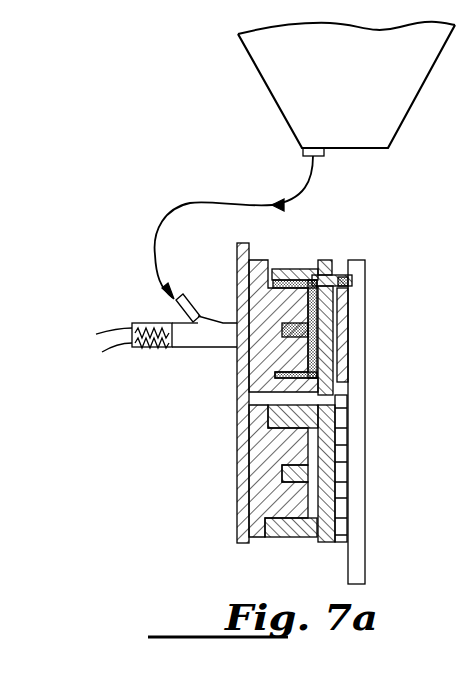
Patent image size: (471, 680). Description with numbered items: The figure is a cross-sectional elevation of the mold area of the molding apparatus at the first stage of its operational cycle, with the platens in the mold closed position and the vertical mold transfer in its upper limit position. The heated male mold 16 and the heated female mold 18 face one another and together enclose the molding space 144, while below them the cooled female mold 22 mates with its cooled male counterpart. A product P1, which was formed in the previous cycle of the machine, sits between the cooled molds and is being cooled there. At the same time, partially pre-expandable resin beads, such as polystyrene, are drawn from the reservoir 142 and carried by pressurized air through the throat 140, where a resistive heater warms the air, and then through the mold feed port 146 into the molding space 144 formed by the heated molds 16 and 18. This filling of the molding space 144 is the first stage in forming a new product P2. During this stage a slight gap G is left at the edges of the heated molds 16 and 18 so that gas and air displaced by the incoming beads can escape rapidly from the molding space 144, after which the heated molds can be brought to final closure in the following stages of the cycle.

The reservoir 142 is at (302, 77).
The throat 140 is at (168, 346).
The mold feed port 146 is at (246, 366).
The heated male mold 16 is at (255, 268).
The gap G is at (290, 281).
The molding space 144 is at (330, 262).
The heated female mold 18 is at (353, 262).
The product P2 is at (325, 342).
The cooled female mold 22 is at (325, 477).
The product P1 is at (282, 468).